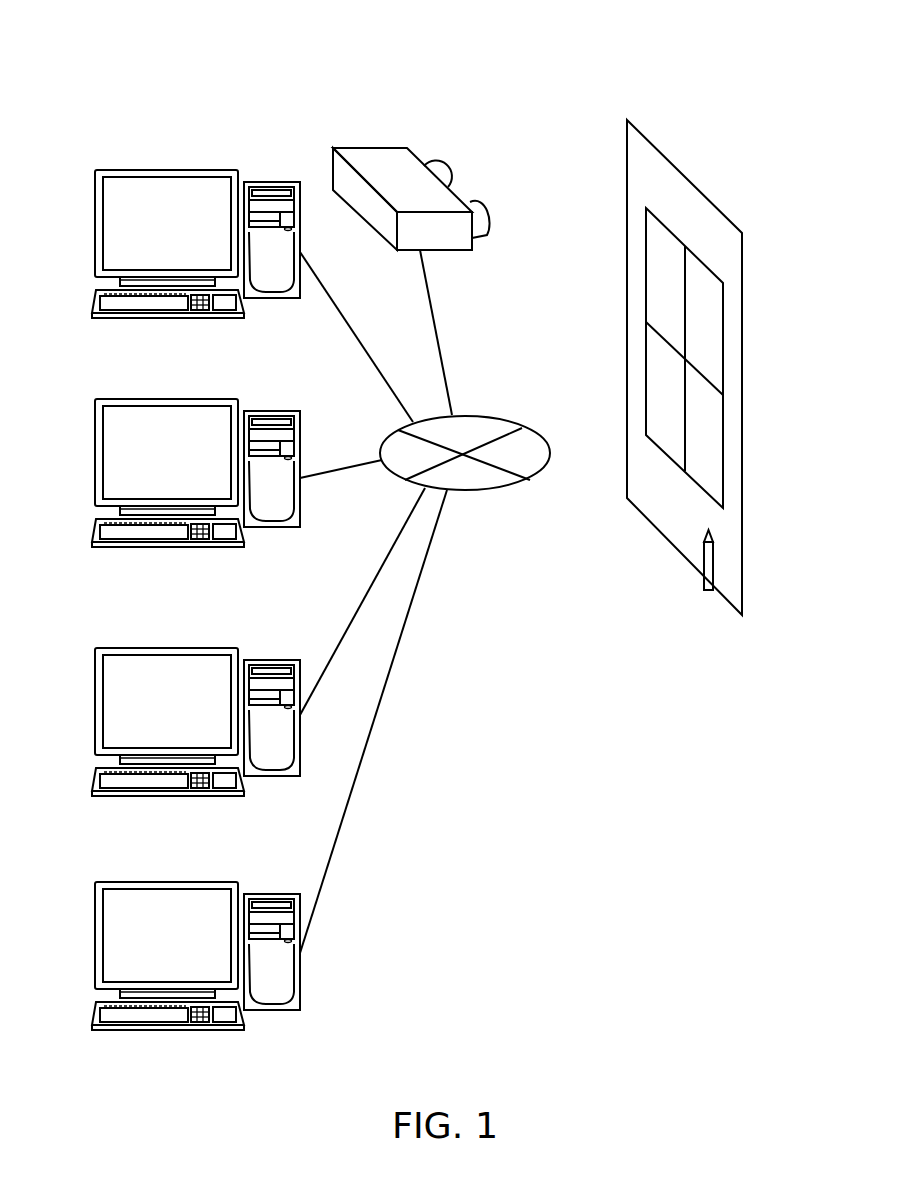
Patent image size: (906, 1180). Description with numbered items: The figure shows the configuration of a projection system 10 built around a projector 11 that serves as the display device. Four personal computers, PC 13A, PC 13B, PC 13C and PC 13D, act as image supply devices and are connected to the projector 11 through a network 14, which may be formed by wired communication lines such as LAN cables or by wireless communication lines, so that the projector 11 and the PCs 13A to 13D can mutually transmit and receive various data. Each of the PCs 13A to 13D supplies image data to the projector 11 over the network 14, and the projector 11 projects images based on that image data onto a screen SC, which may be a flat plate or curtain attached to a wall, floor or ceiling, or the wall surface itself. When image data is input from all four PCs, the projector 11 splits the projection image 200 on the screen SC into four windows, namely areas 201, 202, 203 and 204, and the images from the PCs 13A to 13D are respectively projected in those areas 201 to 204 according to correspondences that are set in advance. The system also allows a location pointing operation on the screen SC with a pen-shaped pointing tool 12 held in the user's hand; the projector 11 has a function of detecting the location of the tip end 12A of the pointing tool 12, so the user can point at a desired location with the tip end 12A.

The display system 10 is at (373, 34).
The projector 11 is at (371, 147).
The pointing tool 12 is at (716, 573).
The tip end 12A is at (708, 533).
The PC 13A is at (178, 170).
The PC 13B is at (196, 451).
The PC 13C is at (196, 700).
The PC 13D is at (196, 934).
The network 14 is at (500, 490).
The screen SC is at (692, 182).
The projection image 200 is at (723, 322).
The area 201 is at (653, 250).
The area 202 is at (700, 272).
The area 203 is at (653, 392).
The area 204 is at (713, 410).